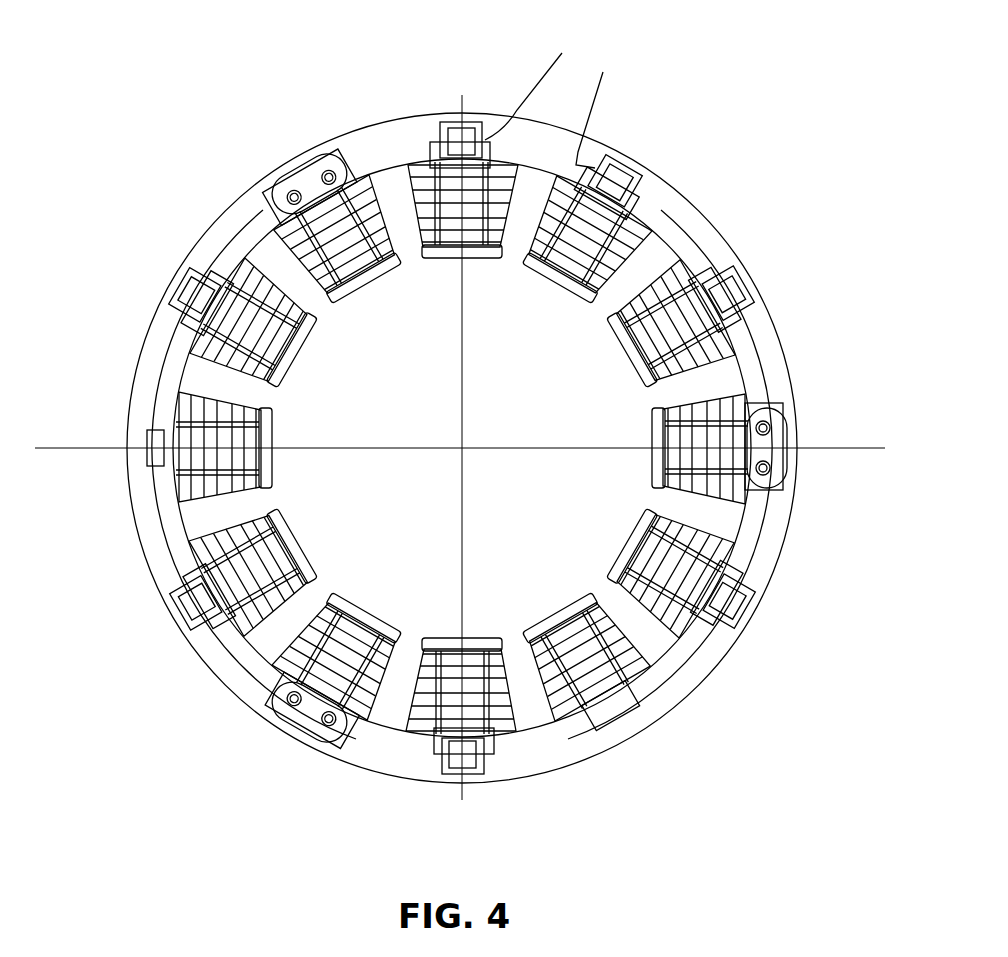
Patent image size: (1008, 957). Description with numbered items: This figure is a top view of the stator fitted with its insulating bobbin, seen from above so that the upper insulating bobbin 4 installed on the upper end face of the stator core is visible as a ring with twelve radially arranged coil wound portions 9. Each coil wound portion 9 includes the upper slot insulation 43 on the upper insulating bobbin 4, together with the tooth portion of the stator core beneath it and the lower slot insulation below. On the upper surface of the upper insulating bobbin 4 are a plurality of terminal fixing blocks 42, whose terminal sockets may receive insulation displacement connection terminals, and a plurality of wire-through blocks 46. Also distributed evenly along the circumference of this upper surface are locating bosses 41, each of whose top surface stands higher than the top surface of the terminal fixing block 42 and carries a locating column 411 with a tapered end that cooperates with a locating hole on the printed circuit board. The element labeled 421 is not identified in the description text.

The upper insulating bobbin 4 is at (683, 230).
The coil wound portion 9 is at (690, 480).
The locating boss 41 is at (305, 715).
The locating column 411 is at (288, 700).
The terminal fixing block 42 is at (470, 143).
The bolt head 421 is at (448, 143).
The upper slot insulation 43 is at (660, 412).
The wire-through block 46 is at (607, 700).